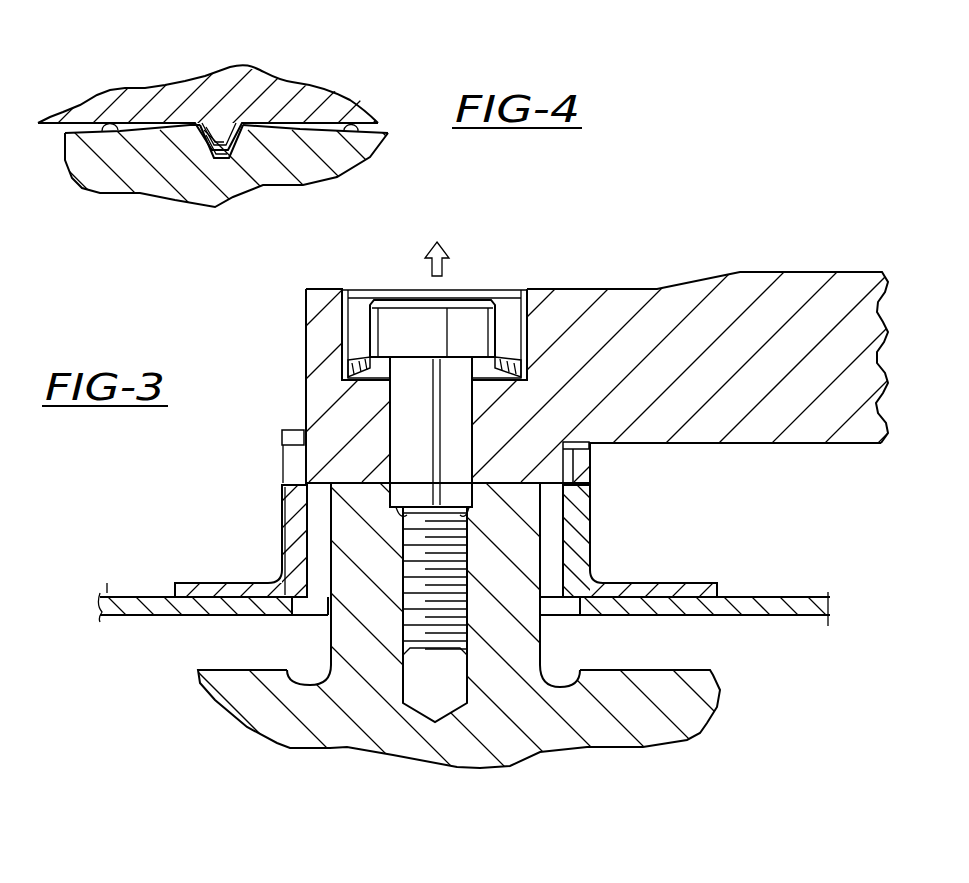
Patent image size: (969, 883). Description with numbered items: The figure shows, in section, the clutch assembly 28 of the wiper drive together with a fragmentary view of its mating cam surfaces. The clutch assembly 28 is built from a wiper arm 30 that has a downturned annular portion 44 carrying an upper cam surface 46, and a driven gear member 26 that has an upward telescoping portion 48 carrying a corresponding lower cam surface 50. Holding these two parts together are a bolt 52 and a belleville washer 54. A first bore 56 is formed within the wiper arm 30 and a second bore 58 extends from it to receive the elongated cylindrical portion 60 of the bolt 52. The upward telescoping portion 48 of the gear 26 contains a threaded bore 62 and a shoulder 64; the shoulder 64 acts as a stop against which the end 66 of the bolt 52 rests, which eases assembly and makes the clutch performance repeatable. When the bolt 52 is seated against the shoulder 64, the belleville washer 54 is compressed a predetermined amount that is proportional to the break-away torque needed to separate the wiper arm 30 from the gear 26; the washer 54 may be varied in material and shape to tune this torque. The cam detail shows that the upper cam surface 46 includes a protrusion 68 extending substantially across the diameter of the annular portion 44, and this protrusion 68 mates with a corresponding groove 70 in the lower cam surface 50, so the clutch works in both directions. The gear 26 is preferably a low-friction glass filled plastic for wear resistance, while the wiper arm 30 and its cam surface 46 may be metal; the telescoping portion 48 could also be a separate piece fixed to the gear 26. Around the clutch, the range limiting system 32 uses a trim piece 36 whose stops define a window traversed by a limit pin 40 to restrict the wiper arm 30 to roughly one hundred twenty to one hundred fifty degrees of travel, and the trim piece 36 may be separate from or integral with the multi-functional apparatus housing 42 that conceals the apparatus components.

In FIG. 3, the driven gear member 26 is at (680, 702).
In FIG. 3, the clutch assembly 28 is at (203, 430).
In FIG. 3, the wiper arm 30 is at (777, 297).
In FIG. 3, the range limiting system 32 is at (717, 462).
In FIG. 3, the trim piece 36 is at (188, 580).
In FIG. 3, the limit pin 40 is at (293, 462).
In FIG. 3, the multi-functional apparatus housing 42 is at (793, 607).
In FIG. 4, the downturned annular portion 44 is at (304, 100).
In FIG. 3, the downturned annular portion 44 is at (362, 456).
In FIG. 4, the upper cam surface 46 is at (352, 122).
In FIG. 3, the upper cam surface 46 is at (580, 522).
In FIG. 4, the upward telescoping portion 48 is at (147, 175).
In FIG. 3, the upward telescoping portion 48 is at (520, 643).
In FIG. 4, the cam surface 50 is at (105, 134).
In FIG. 3, the cam surface 50 is at (585, 498).
In FIG. 3, the bolt 52 is at (390, 328).
In FIG. 3, the belleville washer 54 is at (365, 353).
In FIG. 3, the first bore 56 is at (520, 307).
In FIG. 3, the second bore 58 is at (483, 347).
In FIG. 3, the elongated cylindrical portion 60 is at (405, 396).
In FIG. 3, the threaded bore 62 is at (405, 690).
In FIG. 3, the shoulder 64 is at (343, 510).
In FIG. 3, the end 66 is at (350, 540).
In FIG. 4, the protrusion 68 is at (228, 125).
In FIG. 4, the groove 70 is at (222, 160).